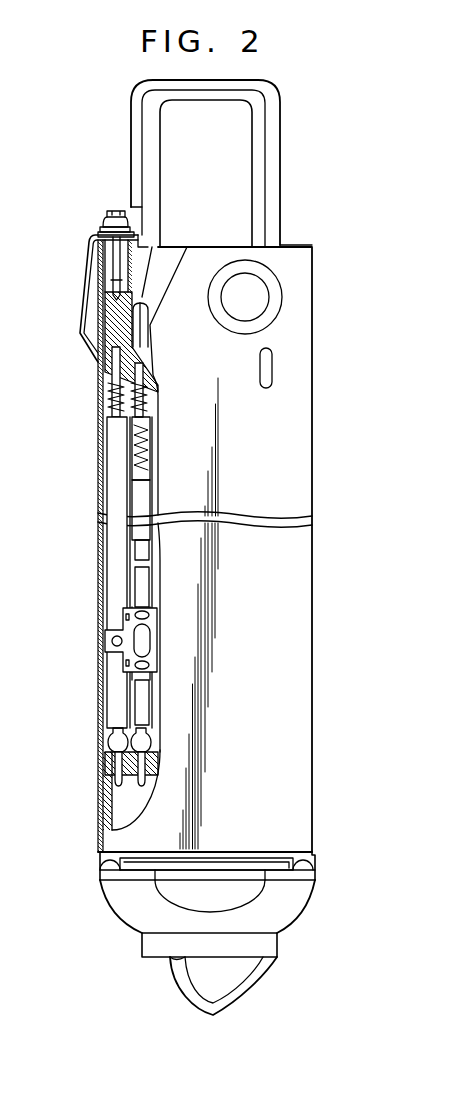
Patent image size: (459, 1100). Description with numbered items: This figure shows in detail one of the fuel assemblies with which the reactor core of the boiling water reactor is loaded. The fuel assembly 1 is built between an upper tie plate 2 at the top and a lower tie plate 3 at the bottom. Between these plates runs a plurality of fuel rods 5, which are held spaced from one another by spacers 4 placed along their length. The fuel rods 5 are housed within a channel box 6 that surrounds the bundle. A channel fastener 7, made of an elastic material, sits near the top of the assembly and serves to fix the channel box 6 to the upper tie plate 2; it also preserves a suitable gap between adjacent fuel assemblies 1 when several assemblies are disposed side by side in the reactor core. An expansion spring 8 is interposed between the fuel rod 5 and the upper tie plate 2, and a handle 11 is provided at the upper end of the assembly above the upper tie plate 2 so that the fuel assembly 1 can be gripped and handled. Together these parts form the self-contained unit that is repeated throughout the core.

The fuel assembly 1 is at (325, 250).
The upper tie plate 2 is at (112, 318).
The lower tie plate 3 is at (293, 915).
The spacer 4 is at (122, 618).
The fuel rod 5 is at (107, 473).
The channel box 6 is at (312, 447).
The channel fastener 7 is at (84, 277).
The expansion spring 8 is at (108, 403).
The handle 11 is at (272, 135).